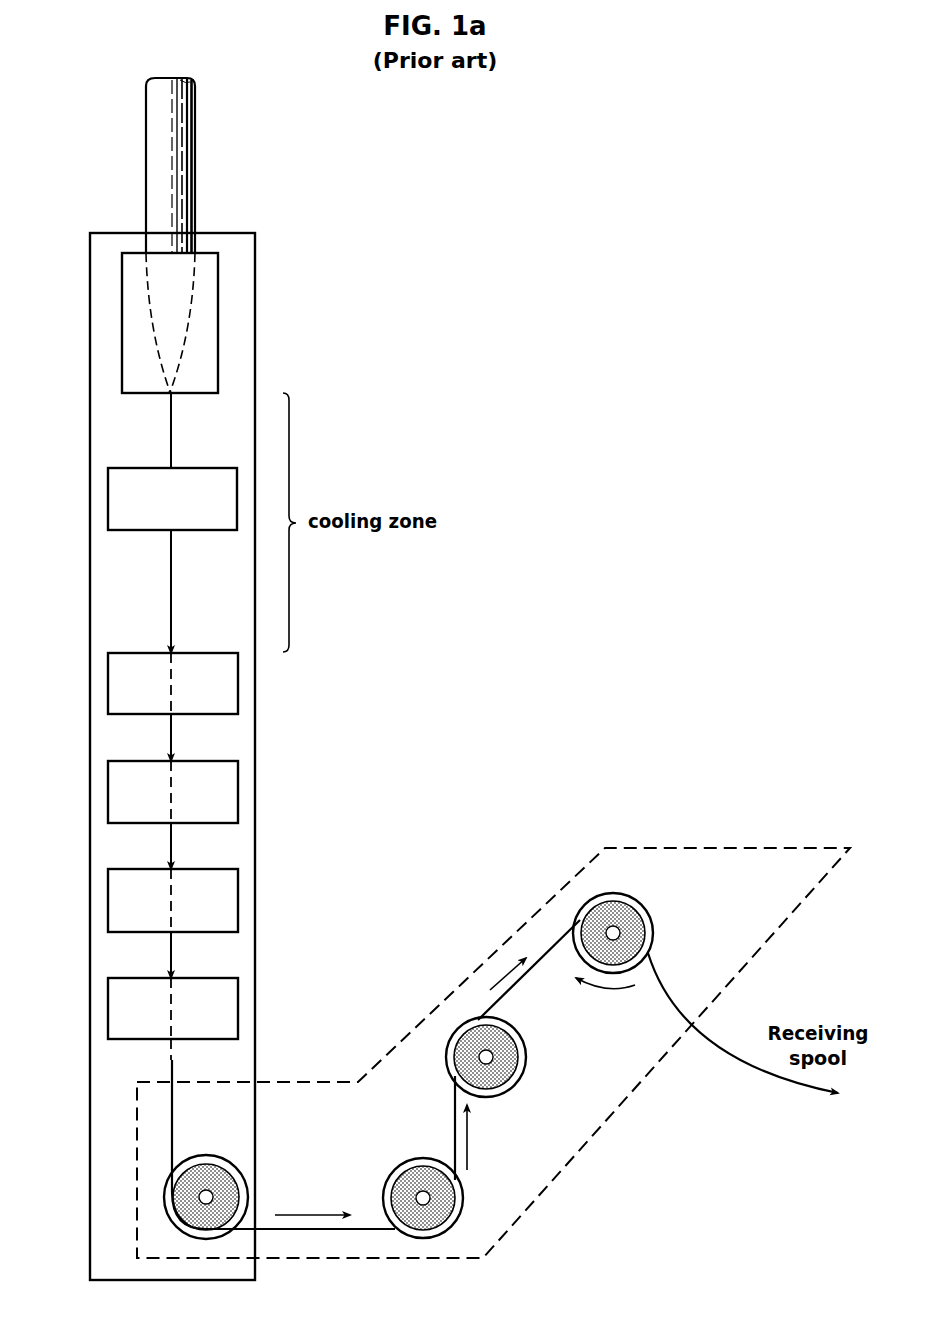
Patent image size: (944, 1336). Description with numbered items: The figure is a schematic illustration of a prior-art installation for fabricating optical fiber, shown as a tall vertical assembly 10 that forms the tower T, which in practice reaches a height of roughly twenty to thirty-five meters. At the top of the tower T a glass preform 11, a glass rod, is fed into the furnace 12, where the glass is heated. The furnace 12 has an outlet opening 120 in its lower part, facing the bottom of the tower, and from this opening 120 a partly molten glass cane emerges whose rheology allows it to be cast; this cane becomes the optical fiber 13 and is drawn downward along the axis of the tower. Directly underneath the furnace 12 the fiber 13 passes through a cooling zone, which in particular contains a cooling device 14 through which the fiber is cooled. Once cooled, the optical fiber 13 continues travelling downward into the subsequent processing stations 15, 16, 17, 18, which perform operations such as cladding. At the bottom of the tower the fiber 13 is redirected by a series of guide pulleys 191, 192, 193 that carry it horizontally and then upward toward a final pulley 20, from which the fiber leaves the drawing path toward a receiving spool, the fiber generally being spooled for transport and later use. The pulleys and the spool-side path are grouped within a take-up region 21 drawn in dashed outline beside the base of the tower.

The optical fiber drawing apparatus 10 is at (295, 136).
The preform 11 is at (196, 162).
The furnace 12 is at (219, 308).
The outlet opening 120 is at (173, 391).
The optical fiber 13 is at (173, 421).
The cooling device 14 is at (205, 468).
The processing station 15 is at (239, 683).
The processing station 16 is at (239, 787).
The processing station 17 is at (239, 891).
The processing station 18 is at (239, 1003).
The first guide pulley 191 is at (232, 1168).
The second guide pulley 192 is at (400, 1166).
The third guide pulley 193 is at (527, 1044).
The capstan 20 is at (638, 902).
The take-up section 21 is at (729, 803).
The tower T is at (134, 588).